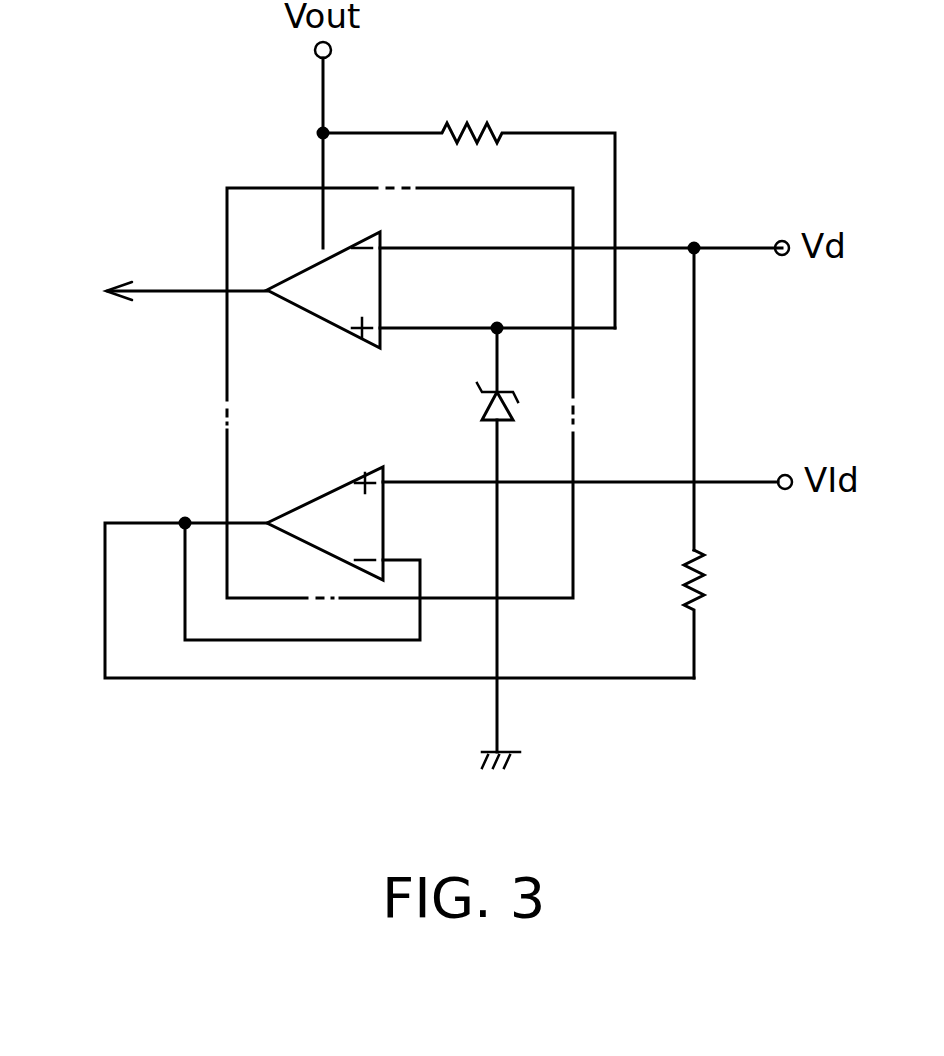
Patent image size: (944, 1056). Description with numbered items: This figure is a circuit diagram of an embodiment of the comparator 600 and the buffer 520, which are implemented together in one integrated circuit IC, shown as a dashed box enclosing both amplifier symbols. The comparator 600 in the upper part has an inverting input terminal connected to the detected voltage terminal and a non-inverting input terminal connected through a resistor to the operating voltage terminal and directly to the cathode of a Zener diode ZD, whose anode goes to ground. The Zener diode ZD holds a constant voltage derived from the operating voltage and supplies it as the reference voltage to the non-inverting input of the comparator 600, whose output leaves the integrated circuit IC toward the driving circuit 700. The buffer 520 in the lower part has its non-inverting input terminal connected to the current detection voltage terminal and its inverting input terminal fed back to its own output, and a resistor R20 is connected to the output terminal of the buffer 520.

The output signal to driving circuit 700 is at (149, 291).
The comparator 600 is at (323, 320).
The buffer 520 is at (338, 487).
The integrated circuit IC is at (227, 455).
The Zener diode ZD is at (516, 537).
The resistor R20 is at (733, 614).